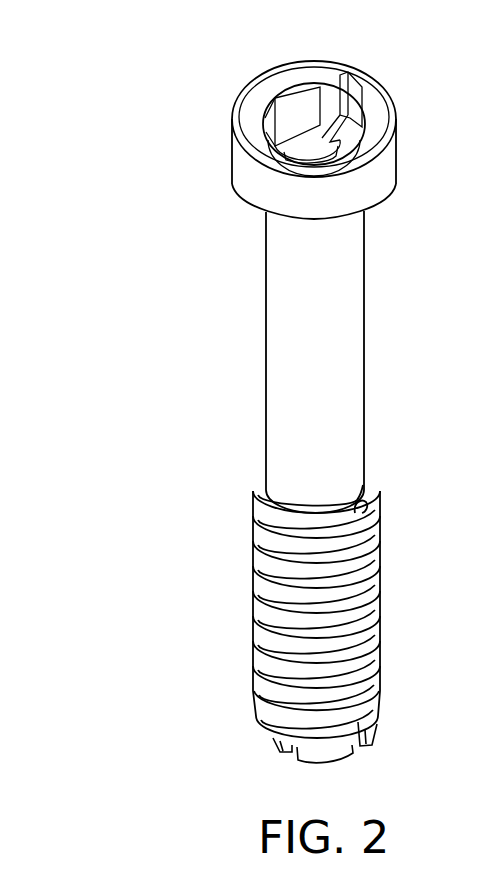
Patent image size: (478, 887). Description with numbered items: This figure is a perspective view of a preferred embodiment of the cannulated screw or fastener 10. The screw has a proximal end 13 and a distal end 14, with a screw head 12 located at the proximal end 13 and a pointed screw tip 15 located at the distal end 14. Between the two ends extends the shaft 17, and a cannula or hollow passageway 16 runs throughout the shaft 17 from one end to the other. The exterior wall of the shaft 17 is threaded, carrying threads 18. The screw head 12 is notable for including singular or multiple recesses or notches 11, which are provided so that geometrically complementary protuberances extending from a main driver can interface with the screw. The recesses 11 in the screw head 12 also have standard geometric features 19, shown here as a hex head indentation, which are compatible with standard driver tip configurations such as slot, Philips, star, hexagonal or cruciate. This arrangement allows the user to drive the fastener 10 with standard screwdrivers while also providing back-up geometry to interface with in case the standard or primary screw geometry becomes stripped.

The cannulated screw or fastener 10 is at (204, 196).
The recesses or notches 11 is at (353, 76).
The screw head 12 is at (263, 188).
The proximal end 13 is at (356, 236).
The distal end 14 is at (262, 722).
The pointed screw tip 15 is at (333, 753).
The cannula or hollow passageway 16 is at (306, 148).
The shaft 17 is at (350, 347).
The threads 18 is at (372, 657).
The standard geometric features 19 is at (286, 108).